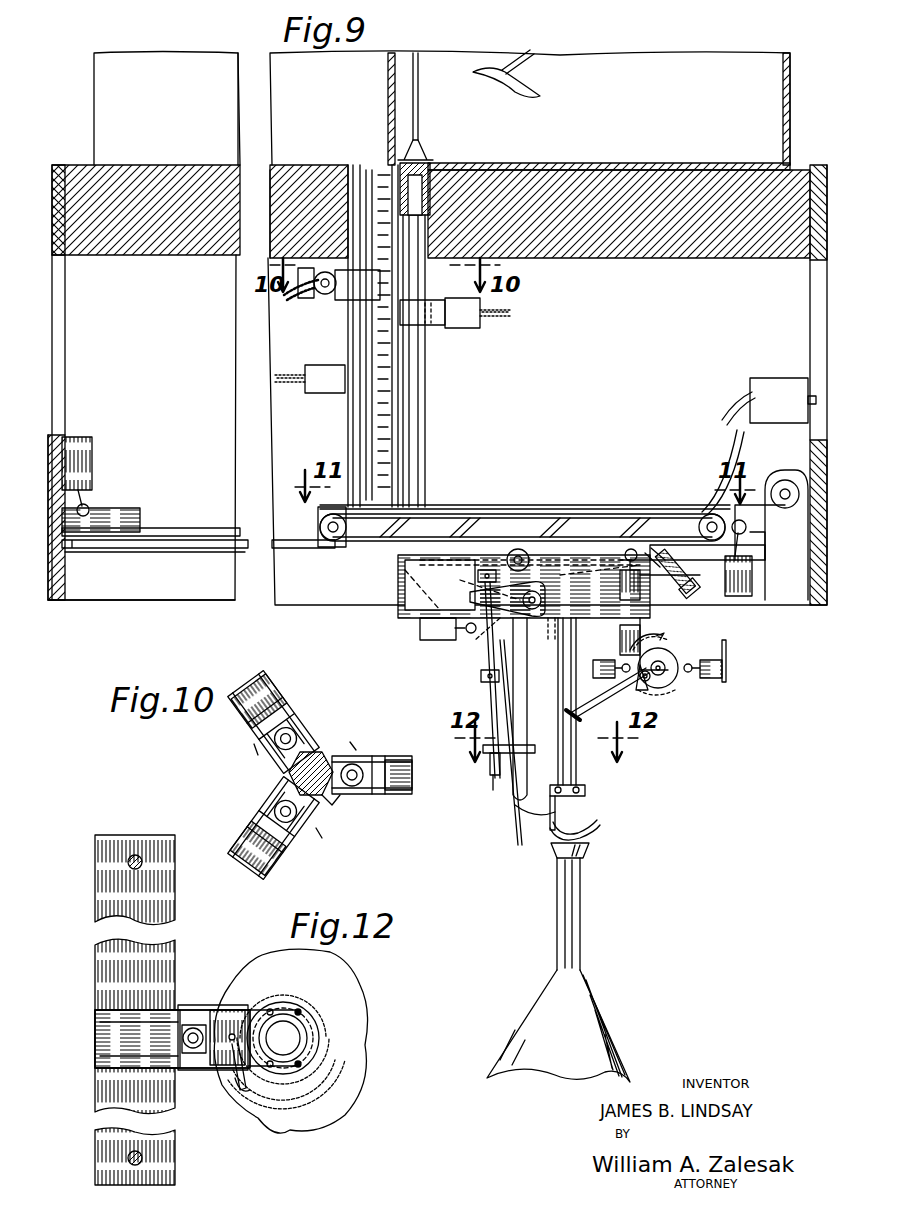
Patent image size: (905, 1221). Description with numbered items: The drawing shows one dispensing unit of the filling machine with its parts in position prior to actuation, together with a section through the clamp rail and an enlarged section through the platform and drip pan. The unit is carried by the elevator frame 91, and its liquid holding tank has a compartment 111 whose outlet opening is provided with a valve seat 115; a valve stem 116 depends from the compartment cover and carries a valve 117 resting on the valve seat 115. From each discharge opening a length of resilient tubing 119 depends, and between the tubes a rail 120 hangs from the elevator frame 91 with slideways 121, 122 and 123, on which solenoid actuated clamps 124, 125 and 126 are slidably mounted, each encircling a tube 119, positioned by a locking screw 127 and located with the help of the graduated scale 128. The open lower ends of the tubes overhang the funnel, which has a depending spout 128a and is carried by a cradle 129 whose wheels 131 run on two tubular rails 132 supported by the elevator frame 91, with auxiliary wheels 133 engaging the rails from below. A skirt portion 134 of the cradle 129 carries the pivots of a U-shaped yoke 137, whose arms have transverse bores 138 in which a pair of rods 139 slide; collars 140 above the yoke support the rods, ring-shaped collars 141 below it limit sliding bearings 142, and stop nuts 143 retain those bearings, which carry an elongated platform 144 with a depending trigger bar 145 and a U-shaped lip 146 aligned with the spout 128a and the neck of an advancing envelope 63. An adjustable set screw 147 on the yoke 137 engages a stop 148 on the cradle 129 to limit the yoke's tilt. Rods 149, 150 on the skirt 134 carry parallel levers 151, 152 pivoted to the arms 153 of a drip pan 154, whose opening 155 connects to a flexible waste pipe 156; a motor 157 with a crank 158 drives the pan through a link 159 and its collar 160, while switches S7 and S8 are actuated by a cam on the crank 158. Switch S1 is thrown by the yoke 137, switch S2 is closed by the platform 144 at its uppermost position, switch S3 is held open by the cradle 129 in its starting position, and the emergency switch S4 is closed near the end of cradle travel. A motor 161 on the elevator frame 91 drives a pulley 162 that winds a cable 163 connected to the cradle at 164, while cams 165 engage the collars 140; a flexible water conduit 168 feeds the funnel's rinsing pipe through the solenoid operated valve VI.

In FIG. 9, the compartment 111 is at (675, 75).
In FIG. 9, the valve stem 116 is at (419, 95).
In FIG. 9, the valve 117 is at (421, 150).
In FIG. 9, the valve seat 115 is at (430, 162).
In FIG. 9, the rail 120 is at (378, 175).
In FIG. 10, the rail 120 is at (292, 772).
In FIG. 9, the graduated scale 128 is at (383, 432).
In FIG. 9, the resilient tubing 119 is at (418, 375).
In FIG. 10, the resilient tubing 119 is at (360, 760).
In FIG. 9, the solenoid actuated clamp 124 is at (325, 292).
In FIG. 10, the solenoid actuated clamp 124 is at (285, 692).
In FIG. 9, the solenoid actuated clamp 125 is at (462, 315).
In FIG. 10, the solenoid actuated clamp 125 is at (395, 800).
In FIG. 9, the solenoid actuated clamp 126 is at (330, 385).
In FIG. 10, the solenoid actuated clamp 126 is at (250, 838).
In FIG. 9, the cradle 129 is at (612, 515).
In FIG. 9, the wheels 131 is at (330, 541).
In FIG. 9, the tubular rails 132 is at (275, 547).
In FIG. 9, the cams 165 is at (163, 525).
In FIG. 9, the emergency switch S4 is at (92, 446).
In FIG. 9, the elevator frame 91 is at (128, 597).
In FIG. 9, the skirt portion 134 is at (410, 618).
In FIG. 9, the switch S2 is at (420, 643).
In FIG. 9, the auxiliary wheels 133 is at (518, 552).
In FIG. 9, the collars 140 is at (488, 565).
In FIG. 9, the U-shaped yoke 137 is at (525, 594).
In FIG. 9, the transverse bores 138 is at (465, 628).
In FIG. 9, the rods 139 is at (487, 668).
In FIG. 12, the rods 139 is at (134, 855).
In FIG. 9, the ring-shaped collar 141 is at (482, 682).
In FIG. 9, the elongated platform 144 is at (487, 746).
In FIG. 12, the elongated platform 144 is at (100, 966).
In FIG. 9, the sliding bearing 142 is at (490, 758).
In FIG. 9, the stop nut 143 is at (496, 778).
In FIG. 9, the funnel spout 128a is at (517, 800).
In FIG. 12, the funnel spout 128a is at (185, 1040).
In FIG. 9, the trigger bar 145 is at (510, 845).
In FIG. 9, the drip pan 154 is at (540, 818).
In FIG. 12, the drip pan 154 is at (228, 1048).
In FIG. 9, the rod 150 is at (546, 628).
In FIG. 9, the parallel levers 152 is at (560, 745).
In FIG. 12, the parallel levers 152 is at (300, 1008).
In FIG. 9, the parallel levers 151 is at (576, 757).
In FIG. 12, the parallel levers 151 is at (302, 1010).
In FIG. 9, the arms 153 is at (567, 807).
In FIG. 12, the arms 153 is at (265, 1010).
In FIG. 9, the flexible waste pipe 156 is at (582, 826).
In FIG. 12, the flexible waste pipe 156 is at (236, 1092).
In FIG. 9, the rod 149 is at (612, 601).
In FIG. 9, the switch S1 is at (642, 638).
In FIG. 9, the switch S7 is at (609, 678).
In FIG. 9, the switch S8 is at (712, 678).
In FIG. 9, the motor 157 is at (670, 675).
In FIG. 9, the crank 158 is at (650, 682).
In FIG. 9, the link 159 is at (662, 700).
In FIG. 9, the sleeve or collar 160 is at (600, 718).
In FIG. 9, the stop 148 is at (680, 575).
In FIG. 9, the adjustable set screw 147 is at (696, 598).
In FIG. 9, the switch S3 is at (740, 598).
In FIG. 9, the cable 163 is at (752, 500).
In FIG. 9, the pulley 162 is at (790, 508).
In FIG. 9, the motor 161 is at (786, 480).
In FIG. 9, the cable connection 164 is at (702, 500).
In FIG. 9, the flexible water conduit 168 is at (728, 412).
In FIG. 9, the solenoid operated valve VI is at (783, 400).
In FIG. 9, the envelope 63 is at (580, 1005).
In FIG. 10, the slideway 121 is at (318, 748).
In FIG. 10, the slideway 123 is at (292, 782).
In FIG. 10, the slideway 122 is at (324, 790).
In FIG. 10, the locking screw 127 is at (265, 755).
In FIG. 12, the U-shaped lip 146 is at (192, 1010).
In FIG. 12, the opening 155 is at (232, 1030).